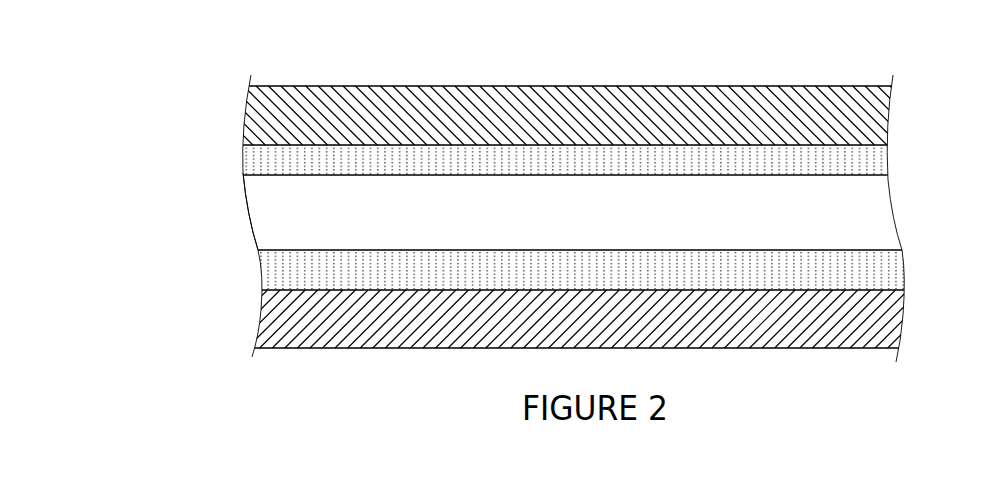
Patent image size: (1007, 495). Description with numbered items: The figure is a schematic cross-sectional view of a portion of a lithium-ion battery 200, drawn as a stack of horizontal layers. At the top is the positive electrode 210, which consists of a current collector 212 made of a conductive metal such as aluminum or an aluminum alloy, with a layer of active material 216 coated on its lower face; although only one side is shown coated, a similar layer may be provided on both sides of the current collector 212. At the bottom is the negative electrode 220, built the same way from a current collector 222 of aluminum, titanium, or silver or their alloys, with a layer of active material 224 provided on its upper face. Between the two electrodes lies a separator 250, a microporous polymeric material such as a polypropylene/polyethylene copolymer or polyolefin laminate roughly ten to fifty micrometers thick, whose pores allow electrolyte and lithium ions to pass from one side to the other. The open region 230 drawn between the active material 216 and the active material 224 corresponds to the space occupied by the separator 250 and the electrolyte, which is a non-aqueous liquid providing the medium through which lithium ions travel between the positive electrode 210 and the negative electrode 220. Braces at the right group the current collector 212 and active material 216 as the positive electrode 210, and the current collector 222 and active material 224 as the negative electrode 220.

The battery 200 is at (725, 57).
The positive electrode 210 is at (902, 85).
The current collector 212 is at (480, 107).
The active material 216 is at (263, 162).
The gap 230 is at (575, 226).
The separator 250 is at (277, 230).
The negative electrode 220 is at (908, 250).
The active material 224 is at (287, 273).
The current collector 222 is at (788, 333).